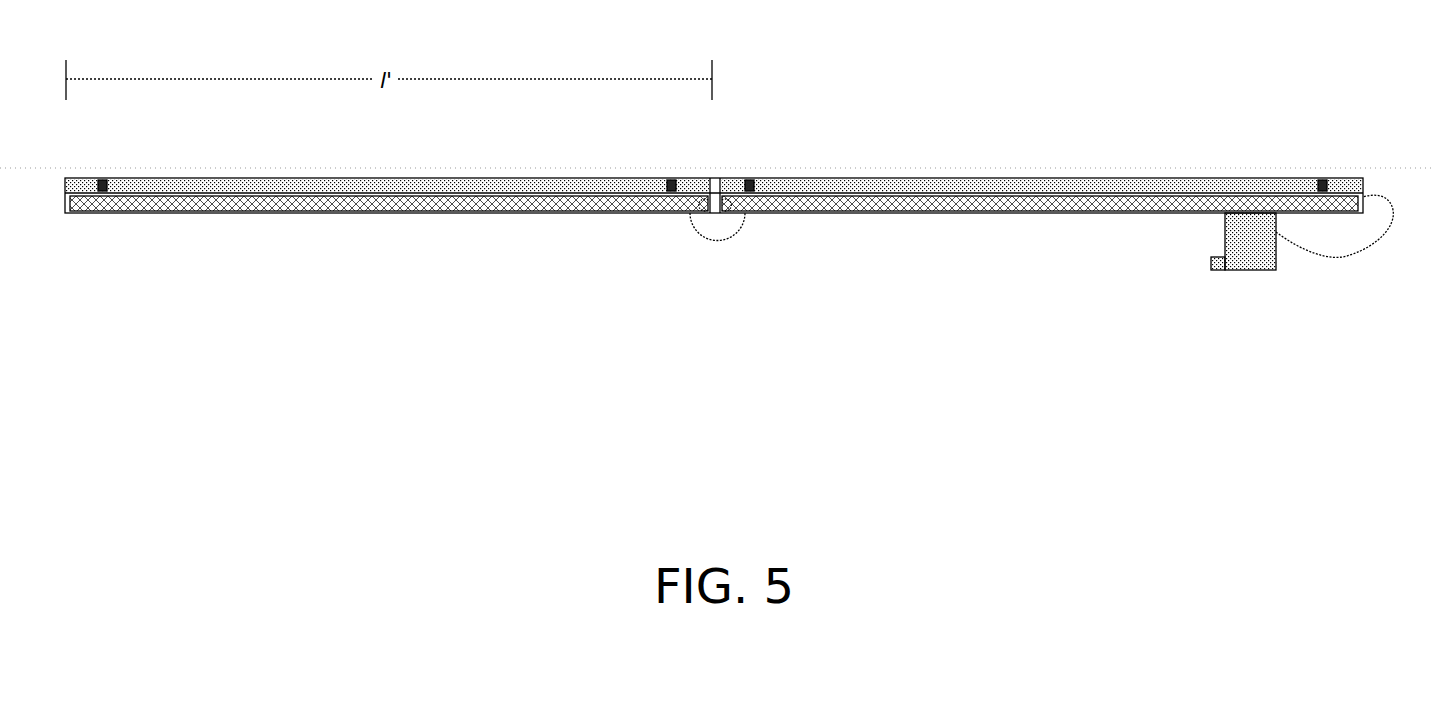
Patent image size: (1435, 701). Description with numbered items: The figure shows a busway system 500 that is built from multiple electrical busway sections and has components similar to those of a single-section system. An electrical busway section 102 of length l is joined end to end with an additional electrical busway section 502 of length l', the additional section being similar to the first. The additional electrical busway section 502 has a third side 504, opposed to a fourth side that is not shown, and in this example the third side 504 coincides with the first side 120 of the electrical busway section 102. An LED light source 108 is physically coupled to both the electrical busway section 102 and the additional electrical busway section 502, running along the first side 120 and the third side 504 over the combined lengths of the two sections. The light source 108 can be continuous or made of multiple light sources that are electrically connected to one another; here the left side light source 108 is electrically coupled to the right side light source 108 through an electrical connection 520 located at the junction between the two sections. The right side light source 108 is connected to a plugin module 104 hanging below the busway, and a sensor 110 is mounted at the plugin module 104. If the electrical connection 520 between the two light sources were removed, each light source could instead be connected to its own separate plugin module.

The busway system 500 is at (1325, 104).
The electrical busway section 102 is at (938, 181).
The plugin module 104 is at (1252, 274).
The LED light source 108 is at (484, 213).
The sensor 110 is at (1209, 263).
The first side 120 is at (1115, 187).
The additional electrical busway section 502 is at (413, 186).
The third side 504 is at (170, 186).
The electrical connection 520 is at (713, 226).